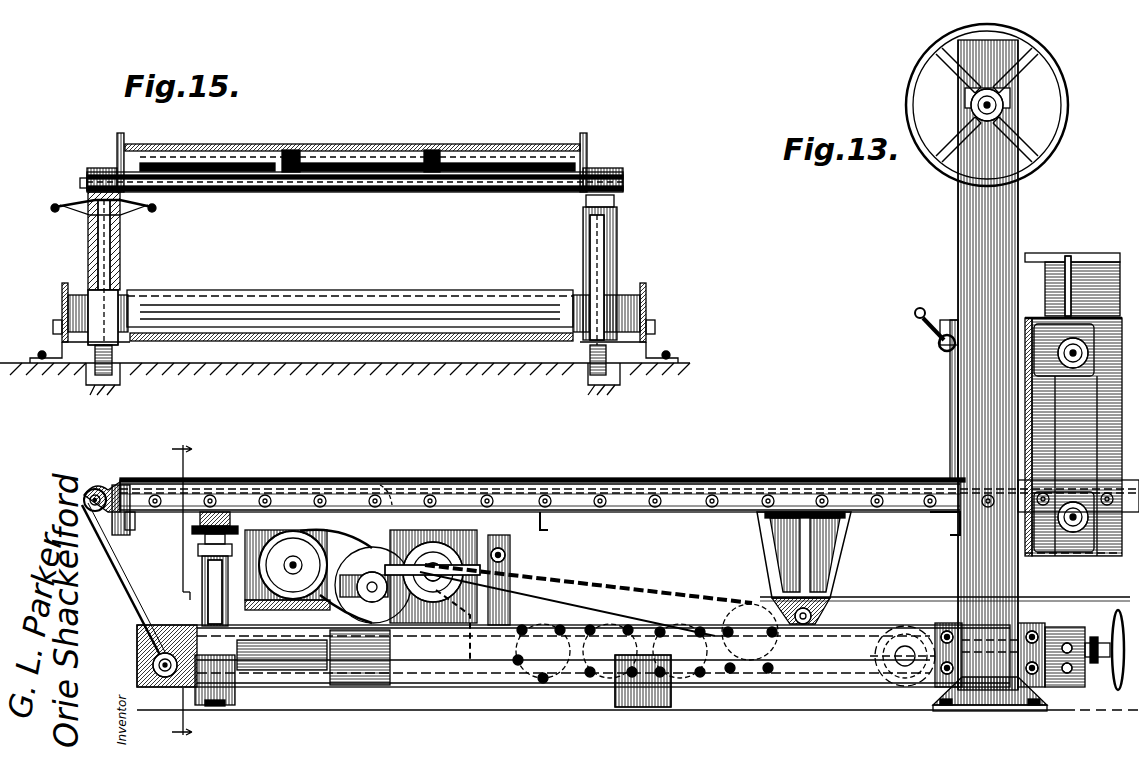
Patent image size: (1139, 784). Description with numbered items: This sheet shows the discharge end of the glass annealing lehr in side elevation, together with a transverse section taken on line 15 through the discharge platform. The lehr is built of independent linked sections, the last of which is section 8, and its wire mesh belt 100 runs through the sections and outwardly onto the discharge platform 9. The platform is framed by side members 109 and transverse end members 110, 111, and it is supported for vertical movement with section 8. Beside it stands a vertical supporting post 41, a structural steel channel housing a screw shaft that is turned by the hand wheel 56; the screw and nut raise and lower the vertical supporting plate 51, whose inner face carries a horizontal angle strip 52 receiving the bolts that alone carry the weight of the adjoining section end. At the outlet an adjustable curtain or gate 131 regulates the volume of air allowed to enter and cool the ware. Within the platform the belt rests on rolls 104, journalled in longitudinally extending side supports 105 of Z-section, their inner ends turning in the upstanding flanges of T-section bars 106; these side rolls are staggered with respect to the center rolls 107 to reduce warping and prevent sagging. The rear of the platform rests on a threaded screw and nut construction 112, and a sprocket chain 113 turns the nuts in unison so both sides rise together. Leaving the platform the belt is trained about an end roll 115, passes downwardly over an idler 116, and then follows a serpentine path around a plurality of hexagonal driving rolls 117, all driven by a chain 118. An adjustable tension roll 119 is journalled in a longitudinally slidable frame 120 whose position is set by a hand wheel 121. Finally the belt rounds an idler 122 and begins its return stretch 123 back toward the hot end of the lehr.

In FIG. 15, the wire mesh belt 100 is at (375, 145).
In FIG. 13, the wire mesh belt 100 is at (628, 487).
In FIG. 15, the rolls 104 is at (202, 160).
In FIG. 13, the rolls 104 is at (458, 492).
In FIG. 15, the side supports of Z-section 105 is at (123, 142).
In FIG. 15, the T-section bars 106 is at (290, 150).
In FIG. 15, the rolls at the center of the tunnel 107 is at (337, 156).
In FIG. 13, the rolls at the center of the tunnel 107 is at (318, 494).
In FIG. 15, the side members 109 is at (117, 152).
In FIG. 13, the side members 109 is at (812, 480).
In FIG. 15, the threaded screw and nut construction 112 is at (116, 256).
In FIG. 15, the sprocket chain 113 is at (372, 193).
In FIG. 13, the hand wheel 56 is at (1058, 150).
In FIG. 13, the vertical supporting post 41 is at (980, 415).
In FIG. 13, the adjustable curtain or gate 131 is at (950, 392).
In FIG. 13, the lehr section 8 is at (1086, 262).
In FIG. 13, the angle strip 52 is at (1040, 440).
In FIG. 13, the vertical supporting plate 51 is at (1035, 470).
In FIG. 13, the discharge platform 9 is at (741, 473).
In FIG. 13, the end roll 115 is at (88, 488).
In FIG. 13, the transverse end member 111 is at (133, 525).
In FIG. 13, the idler 116 is at (130, 658).
In FIG. 13, the section line 15 is at (187, 592).
In FIG. 13, the chain 118 is at (600, 590).
In FIG. 13, the hexagonal driving rolls 117 is at (600, 690).
In FIG. 13, the idler 122 is at (782, 605).
In FIG. 13, the return stretch 123 is at (864, 598).
In FIG. 13, the transverse end member 110 is at (952, 528).
In FIG. 13, the adjustable tension roll 119 is at (902, 690).
In FIG. 13, the longitudinally slidable frame 120 is at (877, 692).
In FIG. 13, the hand wheel 121 is at (1113, 692).